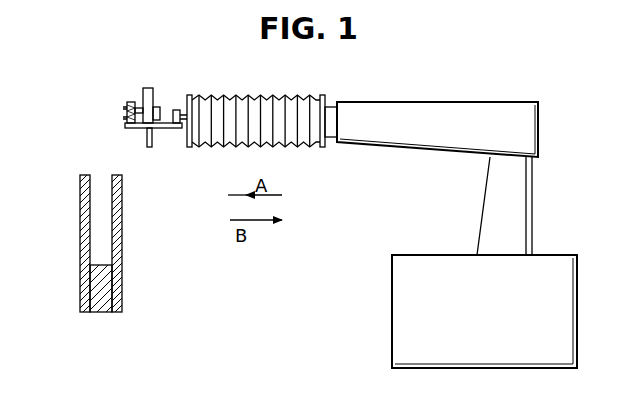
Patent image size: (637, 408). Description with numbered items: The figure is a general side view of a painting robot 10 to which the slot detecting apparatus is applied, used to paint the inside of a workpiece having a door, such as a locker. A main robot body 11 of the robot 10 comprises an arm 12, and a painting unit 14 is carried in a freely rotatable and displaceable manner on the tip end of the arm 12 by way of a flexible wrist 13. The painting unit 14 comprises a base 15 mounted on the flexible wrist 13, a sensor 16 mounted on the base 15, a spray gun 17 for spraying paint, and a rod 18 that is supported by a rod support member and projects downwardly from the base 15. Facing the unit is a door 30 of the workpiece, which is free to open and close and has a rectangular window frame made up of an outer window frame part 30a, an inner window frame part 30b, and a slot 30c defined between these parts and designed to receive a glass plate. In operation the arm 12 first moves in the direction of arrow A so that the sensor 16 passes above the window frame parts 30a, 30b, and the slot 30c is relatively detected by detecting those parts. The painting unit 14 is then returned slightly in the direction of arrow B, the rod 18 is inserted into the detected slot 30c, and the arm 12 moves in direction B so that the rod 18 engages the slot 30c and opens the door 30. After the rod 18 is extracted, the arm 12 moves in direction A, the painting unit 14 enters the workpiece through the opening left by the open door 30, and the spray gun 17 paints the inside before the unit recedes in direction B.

The painting robot 10 is at (487, 70).
The main robot body 11 is at (536, 237).
The arm 12 is at (420, 102).
The flexible wrist 13 is at (255, 94).
The painting unit 14 is at (174, 91).
The base 15 is at (163, 130).
The sensor 16 is at (150, 88).
The spray gun 17 is at (131, 103).
The rod 18 is at (147, 143).
The door 30 is at (110, 287).
The outer window frame part 30a is at (122, 218).
The inner window frame part 30b is at (82, 222).
The slot 30c is at (100, 182).